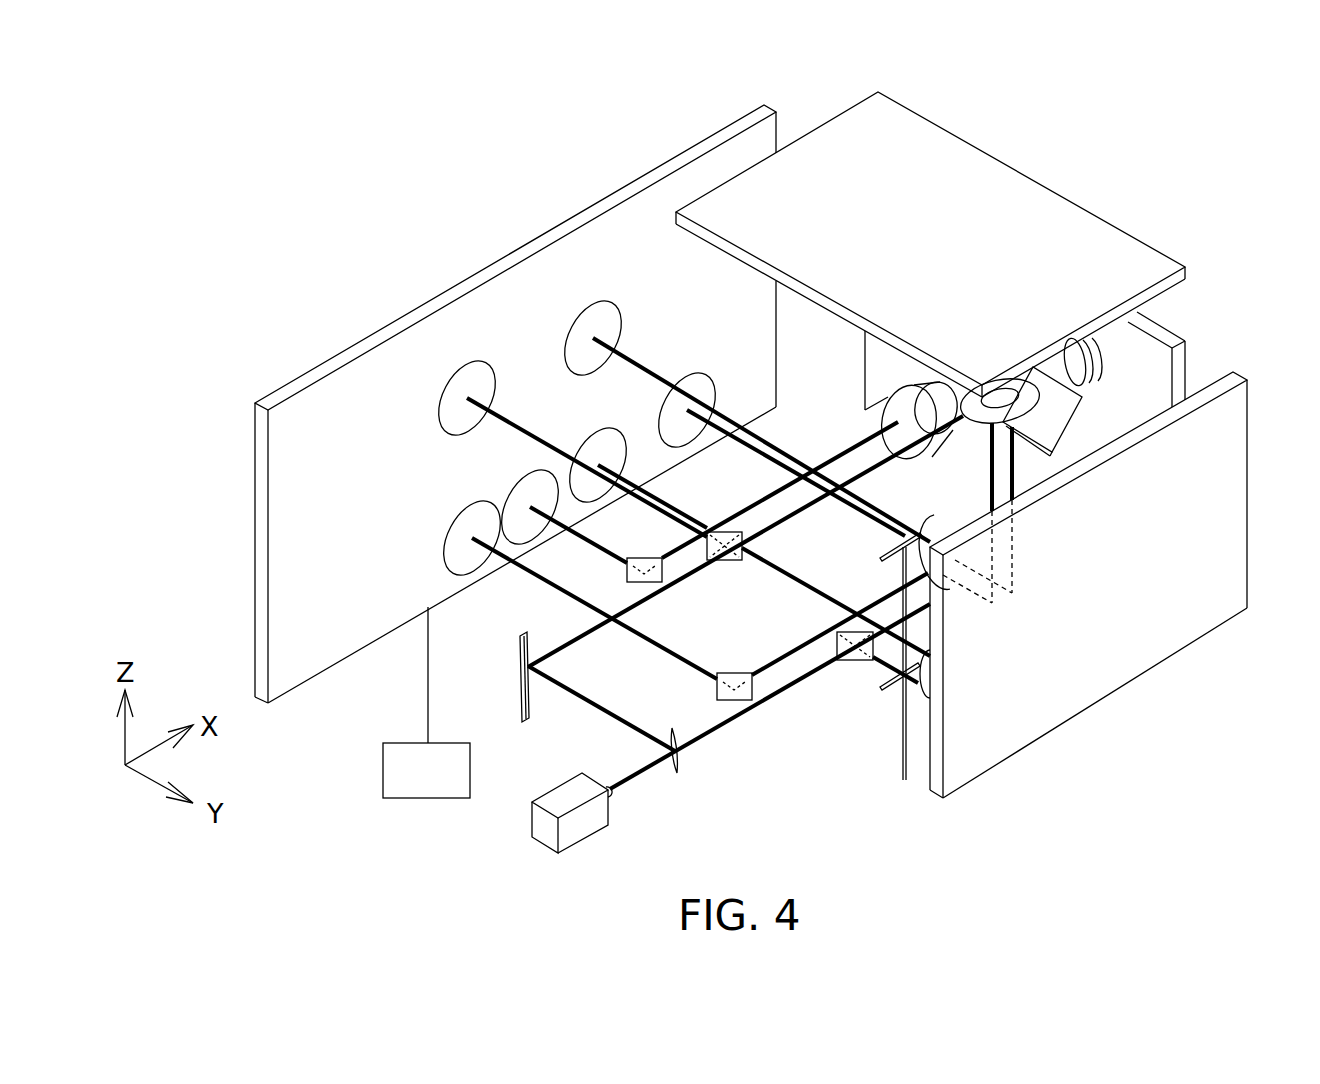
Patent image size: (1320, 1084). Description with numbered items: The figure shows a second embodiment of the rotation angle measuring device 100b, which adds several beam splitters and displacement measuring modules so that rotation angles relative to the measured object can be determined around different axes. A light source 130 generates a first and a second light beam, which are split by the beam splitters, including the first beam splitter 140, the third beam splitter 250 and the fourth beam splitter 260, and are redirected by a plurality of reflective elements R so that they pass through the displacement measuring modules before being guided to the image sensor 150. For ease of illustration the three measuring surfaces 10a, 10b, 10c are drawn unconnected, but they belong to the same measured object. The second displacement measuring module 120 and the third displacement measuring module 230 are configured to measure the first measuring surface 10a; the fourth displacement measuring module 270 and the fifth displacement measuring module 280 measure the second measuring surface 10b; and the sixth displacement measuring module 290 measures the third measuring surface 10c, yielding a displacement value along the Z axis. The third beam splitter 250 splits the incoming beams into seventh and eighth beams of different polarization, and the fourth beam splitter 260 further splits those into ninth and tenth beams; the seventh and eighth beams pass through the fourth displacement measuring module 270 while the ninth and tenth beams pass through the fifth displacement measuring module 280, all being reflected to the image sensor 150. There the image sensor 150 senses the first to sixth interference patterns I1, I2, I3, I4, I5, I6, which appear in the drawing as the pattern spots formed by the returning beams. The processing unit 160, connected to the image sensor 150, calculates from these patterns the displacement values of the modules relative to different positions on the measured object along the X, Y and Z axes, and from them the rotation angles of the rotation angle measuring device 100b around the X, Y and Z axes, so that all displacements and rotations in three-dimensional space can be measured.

The image sensor 150 is at (335, 393).
The processing unit 160 is at (451, 787).
The light source 130 is at (543, 835).
The first beam splitter 140 is at (678, 763).
The second displacement measuring module 120 is at (880, 388).
The third beam splitter 250 is at (837, 640).
The fourth beam splitter 260 is at (880, 682).
The fourth displacement measuring module 270 is at (928, 676).
The fifth displacement measuring module 280 is at (942, 520).
The sixth displacement measuring module 290 is at (1006, 400).
The third displacement measuring module 230 is at (1085, 375).
The first measuring surface 10a is at (1136, 358).
The second measuring surface 10b is at (1196, 366).
The third measuring surface 10c is at (1172, 292).
The rotation angle measuring device 100b is at (352, 818).
The first interference pattern I1 is at (449, 532).
The second interference pattern I2 is at (522, 470).
The third interference pattern I3 is at (454, 375).
The fourth interference pattern I4 is at (598, 436).
The fifth interference pattern I5 is at (577, 316).
The sixth interference pattern I6 is at (693, 376).
The reflective element R is at (645, 558).